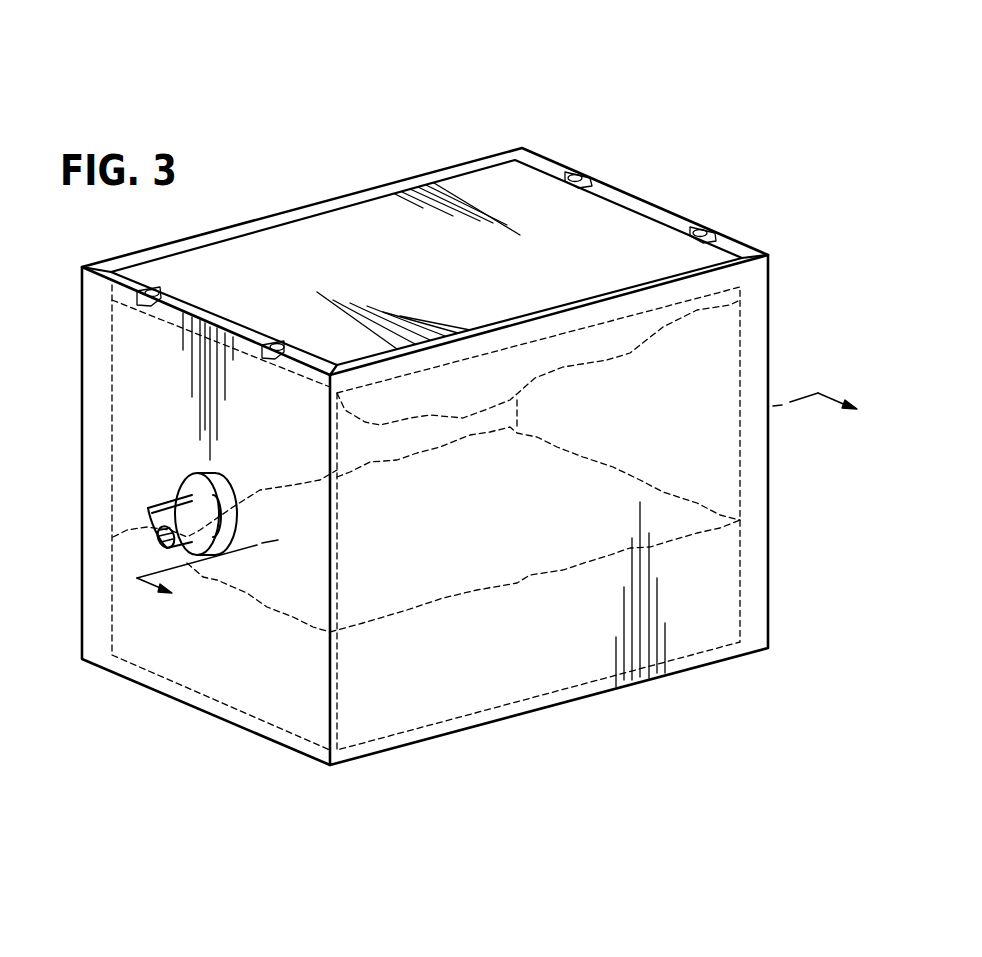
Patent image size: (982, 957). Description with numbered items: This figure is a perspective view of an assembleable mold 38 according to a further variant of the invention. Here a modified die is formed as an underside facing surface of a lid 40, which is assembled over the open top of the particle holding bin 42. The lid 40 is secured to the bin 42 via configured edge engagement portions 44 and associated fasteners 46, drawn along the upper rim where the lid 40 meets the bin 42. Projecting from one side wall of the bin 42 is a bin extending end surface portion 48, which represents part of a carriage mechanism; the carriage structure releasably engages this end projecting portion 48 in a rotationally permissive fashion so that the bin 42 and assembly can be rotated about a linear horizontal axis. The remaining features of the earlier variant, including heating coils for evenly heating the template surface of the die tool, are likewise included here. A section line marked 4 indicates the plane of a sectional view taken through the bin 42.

The assembleable mold 38 is at (600, 106).
The lid 40 is at (327, 226).
The particle holding bin 42 is at (97, 432).
The edge engagement portions 44 is at (143, 300).
The fasteners 46 is at (157, 291).
The bin extending end surface portion 48 is at (170, 506).
The section line 4- 4 is at (504, 501).